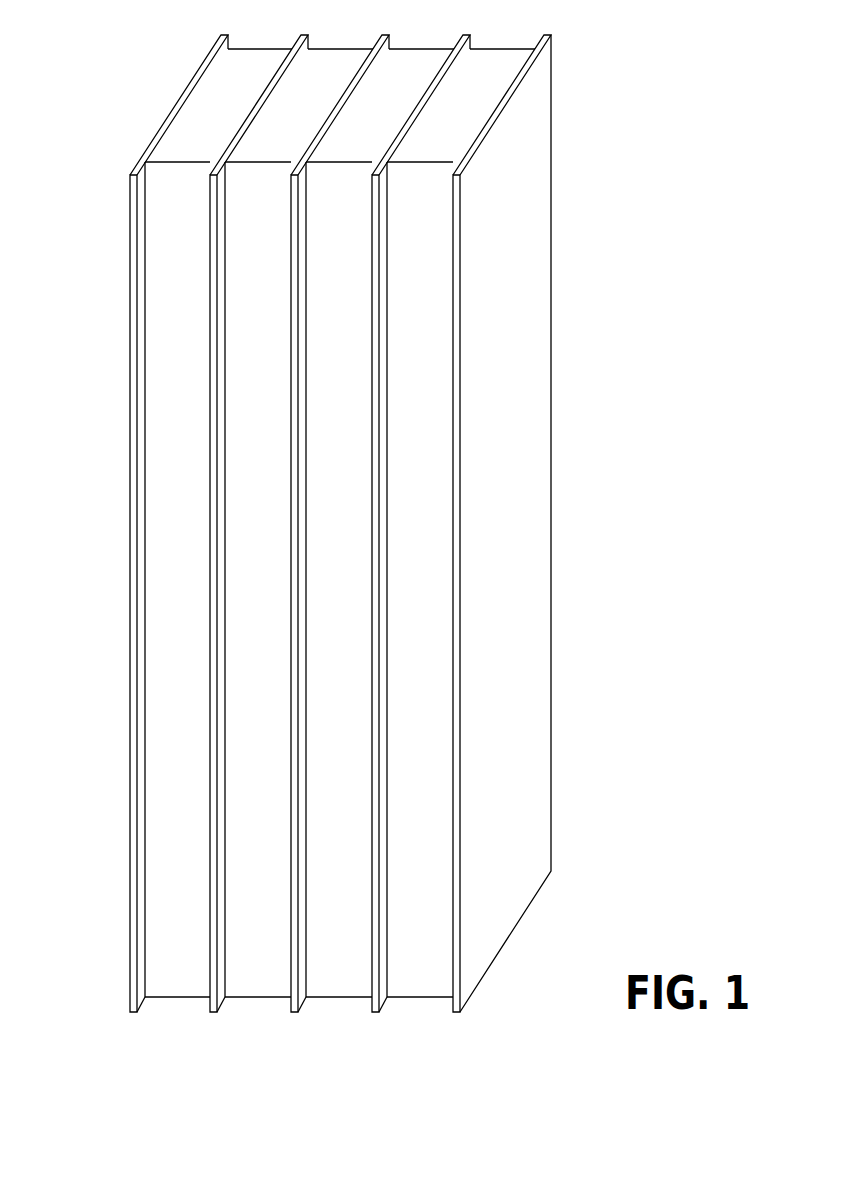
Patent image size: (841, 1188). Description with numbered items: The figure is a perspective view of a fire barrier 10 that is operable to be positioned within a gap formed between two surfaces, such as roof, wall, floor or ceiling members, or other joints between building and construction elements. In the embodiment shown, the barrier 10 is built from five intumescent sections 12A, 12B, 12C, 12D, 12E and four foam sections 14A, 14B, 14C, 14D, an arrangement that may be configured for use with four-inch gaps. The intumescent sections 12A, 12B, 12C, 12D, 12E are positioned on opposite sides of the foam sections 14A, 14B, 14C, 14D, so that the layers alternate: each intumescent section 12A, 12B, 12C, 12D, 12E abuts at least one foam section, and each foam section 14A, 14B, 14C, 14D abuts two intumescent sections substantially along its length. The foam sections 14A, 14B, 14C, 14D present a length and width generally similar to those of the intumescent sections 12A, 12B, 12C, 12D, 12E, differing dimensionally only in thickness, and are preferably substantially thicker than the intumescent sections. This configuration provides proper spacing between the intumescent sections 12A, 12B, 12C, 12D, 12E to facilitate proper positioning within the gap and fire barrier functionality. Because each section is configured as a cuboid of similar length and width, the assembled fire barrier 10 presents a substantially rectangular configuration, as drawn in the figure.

The fire barrier 10 is at (99, 44).
The intumescent section 12A is at (130, 253).
The intumescent section 12B is at (209, 379).
The intumescent section 12C is at (293, 503).
The intumescent section 12D is at (372, 752).
The intumescent section 12E is at (458, 810).
The foam section 14A is at (172, 322).
The foam section 14B is at (253, 450).
The foam section 14C is at (327, 570).
The foam section 14D is at (427, 710).